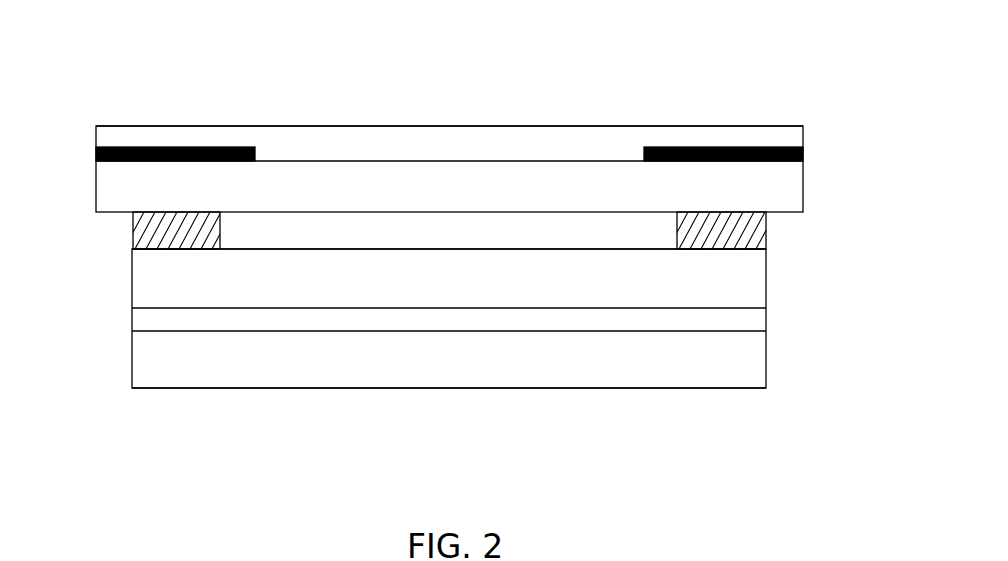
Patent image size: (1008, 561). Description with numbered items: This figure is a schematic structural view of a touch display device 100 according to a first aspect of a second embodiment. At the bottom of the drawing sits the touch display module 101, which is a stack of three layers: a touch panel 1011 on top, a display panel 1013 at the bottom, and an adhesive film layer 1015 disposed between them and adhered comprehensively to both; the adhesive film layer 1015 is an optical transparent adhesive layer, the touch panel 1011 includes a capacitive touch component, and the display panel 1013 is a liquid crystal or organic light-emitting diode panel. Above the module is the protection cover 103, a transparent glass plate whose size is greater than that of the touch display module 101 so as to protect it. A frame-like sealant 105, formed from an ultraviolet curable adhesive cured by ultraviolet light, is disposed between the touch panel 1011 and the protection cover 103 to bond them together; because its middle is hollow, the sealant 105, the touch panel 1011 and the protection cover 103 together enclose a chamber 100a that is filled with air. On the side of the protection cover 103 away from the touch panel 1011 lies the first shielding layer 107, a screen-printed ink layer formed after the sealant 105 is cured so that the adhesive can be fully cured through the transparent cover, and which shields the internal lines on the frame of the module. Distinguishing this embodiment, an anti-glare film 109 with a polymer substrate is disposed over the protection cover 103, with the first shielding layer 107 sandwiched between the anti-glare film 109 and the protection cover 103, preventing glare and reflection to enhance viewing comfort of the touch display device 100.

The touch display device 100 is at (160, 85).
The chamber 100a is at (405, 230).
The touch display module 101 is at (437, 338).
The touch panel 1011 is at (742, 265).
The display panel 1013 is at (742, 370).
The adhesive film layer 1015 is at (743, 320).
The protection cover 103 is at (775, 189).
The sealant 105 is at (740, 232).
The first shielding layer 107 is at (803, 153).
The anti-glare film 109 is at (767, 137).